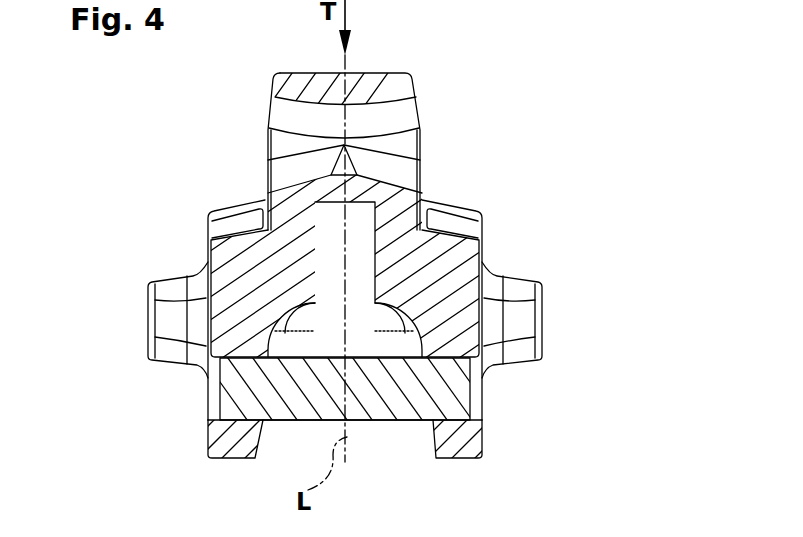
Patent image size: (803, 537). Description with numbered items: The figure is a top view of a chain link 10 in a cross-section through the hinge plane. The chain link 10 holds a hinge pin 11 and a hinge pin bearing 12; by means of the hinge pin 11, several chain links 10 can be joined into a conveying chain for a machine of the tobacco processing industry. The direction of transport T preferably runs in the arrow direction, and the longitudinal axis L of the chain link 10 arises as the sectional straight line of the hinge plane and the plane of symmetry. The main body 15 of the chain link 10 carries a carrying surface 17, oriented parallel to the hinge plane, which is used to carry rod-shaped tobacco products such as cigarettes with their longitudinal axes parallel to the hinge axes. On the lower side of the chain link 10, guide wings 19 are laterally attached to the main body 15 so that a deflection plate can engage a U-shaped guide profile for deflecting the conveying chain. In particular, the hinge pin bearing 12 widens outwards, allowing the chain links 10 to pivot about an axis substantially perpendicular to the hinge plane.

The chain link 10 is at (548, 239).
The hinge pin 11 is at (400, 395).
The hinge pin bearing 12 is at (380, 118).
The main body 15 is at (496, 408).
The carrying surface 17 is at (445, 255).
The guide wings 19 is at (165, 319).